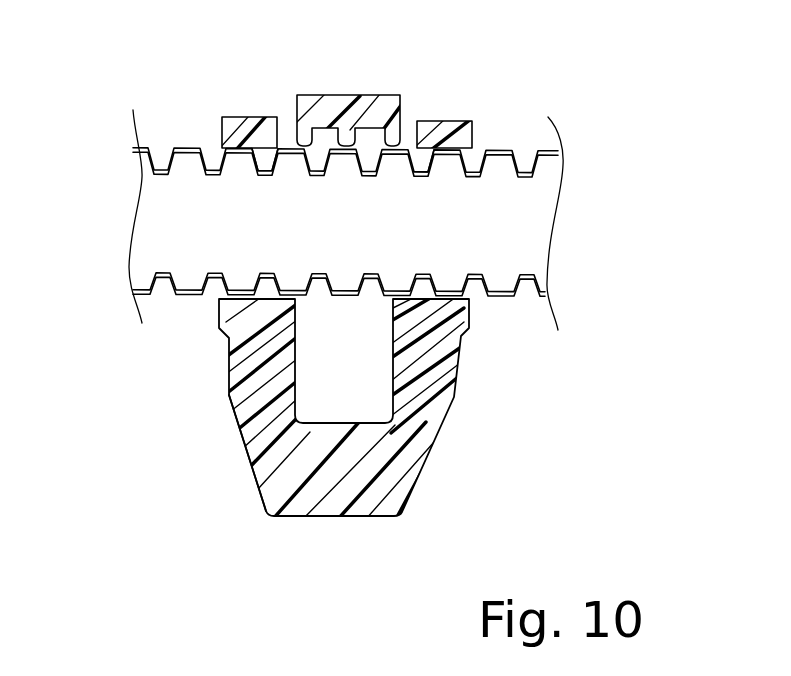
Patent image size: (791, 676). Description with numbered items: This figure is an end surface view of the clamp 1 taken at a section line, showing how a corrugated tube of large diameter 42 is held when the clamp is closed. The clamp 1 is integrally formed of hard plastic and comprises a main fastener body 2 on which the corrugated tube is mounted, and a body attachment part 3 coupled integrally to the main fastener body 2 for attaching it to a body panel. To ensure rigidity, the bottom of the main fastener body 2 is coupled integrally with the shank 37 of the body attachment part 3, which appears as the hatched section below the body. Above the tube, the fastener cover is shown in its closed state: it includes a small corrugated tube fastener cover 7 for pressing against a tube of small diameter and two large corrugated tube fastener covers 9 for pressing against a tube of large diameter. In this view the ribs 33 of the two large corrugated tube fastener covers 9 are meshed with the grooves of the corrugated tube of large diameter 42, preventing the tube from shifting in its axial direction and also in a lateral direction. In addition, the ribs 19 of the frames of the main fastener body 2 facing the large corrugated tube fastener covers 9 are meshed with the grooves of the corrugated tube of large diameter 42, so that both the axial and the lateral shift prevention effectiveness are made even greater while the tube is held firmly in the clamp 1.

The clamp 1 is at (497, 403).
The main fastener body 2 is at (219, 316).
The body attachment part 3 is at (246, 453).
The small corrugated tube fastener cover 7 is at (337, 108).
The large corrugated tube fastener covers 9 is at (242, 130).
The ribs 19 is at (268, 286).
The ribs 33 is at (268, 164).
The shank 37 is at (313, 458).
The corrugated tube of large diameter 42 is at (505, 151).